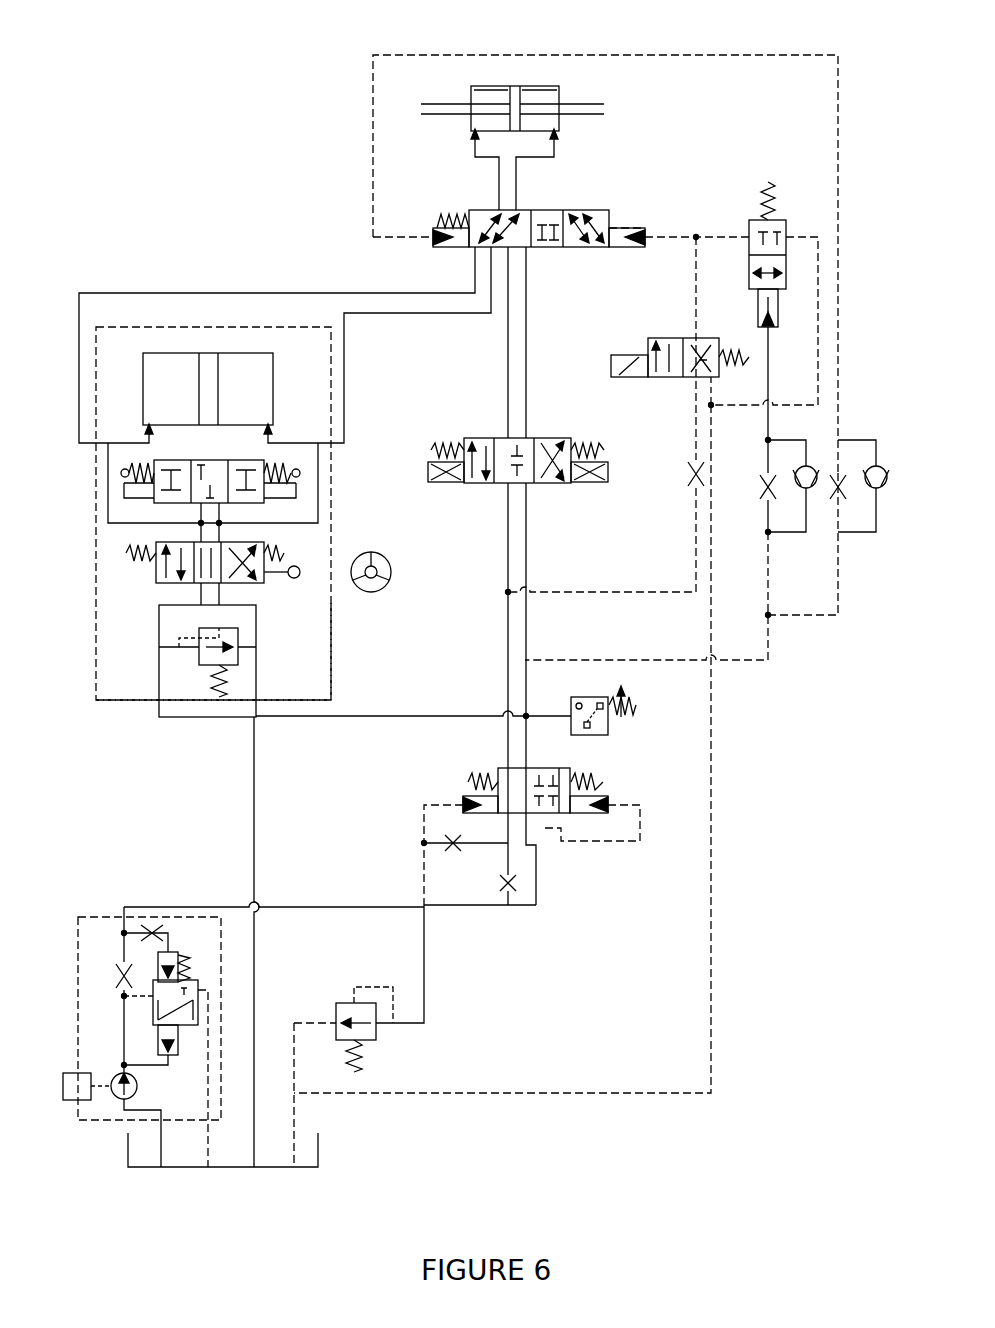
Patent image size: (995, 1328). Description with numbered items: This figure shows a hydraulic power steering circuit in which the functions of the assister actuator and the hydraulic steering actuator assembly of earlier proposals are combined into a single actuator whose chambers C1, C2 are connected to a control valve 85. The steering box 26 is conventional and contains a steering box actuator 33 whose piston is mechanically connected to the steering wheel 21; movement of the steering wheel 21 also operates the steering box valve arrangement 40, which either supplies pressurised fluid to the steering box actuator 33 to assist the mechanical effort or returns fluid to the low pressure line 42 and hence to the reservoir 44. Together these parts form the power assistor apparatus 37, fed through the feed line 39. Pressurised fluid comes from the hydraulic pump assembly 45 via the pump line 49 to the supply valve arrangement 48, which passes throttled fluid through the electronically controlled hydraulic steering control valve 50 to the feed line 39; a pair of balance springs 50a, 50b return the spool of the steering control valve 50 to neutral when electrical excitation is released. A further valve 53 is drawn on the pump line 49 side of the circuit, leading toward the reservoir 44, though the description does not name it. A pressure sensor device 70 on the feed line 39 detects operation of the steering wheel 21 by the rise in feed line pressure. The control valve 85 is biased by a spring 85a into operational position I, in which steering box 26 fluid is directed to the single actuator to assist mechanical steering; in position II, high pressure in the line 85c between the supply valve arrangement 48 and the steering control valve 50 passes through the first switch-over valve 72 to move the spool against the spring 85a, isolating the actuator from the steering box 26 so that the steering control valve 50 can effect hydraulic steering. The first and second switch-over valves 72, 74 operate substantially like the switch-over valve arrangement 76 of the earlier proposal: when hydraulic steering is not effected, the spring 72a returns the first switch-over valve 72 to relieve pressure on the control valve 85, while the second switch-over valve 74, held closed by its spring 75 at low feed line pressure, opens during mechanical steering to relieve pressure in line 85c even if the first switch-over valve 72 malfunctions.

The chamber C1 is at (488, 90).
The chamber C2 is at (530, 90).
The control valve 85 is at (614, 200).
The spring 85a is at (447, 230).
The line 85c is at (510, 560).
The steering box actuator 33 is at (283, 369).
The steering box 26 is at (335, 492).
The power assistor apparatus 37 is at (352, 660).
The steering box valve arrangement 40 is at (130, 584).
The feed line 39 is at (200, 717).
The steering wheel 21 is at (370, 592).
The low pressure line 42 is at (255, 800).
The electronically controlled hydraulic steering control valve 50 is at (465, 415).
The balance spring 50a is at (440, 445).
The balance spring 50b is at (593, 448).
The first switch-over valve 72 is at (648, 334).
The spring 72a is at (710, 355).
The second switch-over valve 74 is at (785, 225).
The spring 75 is at (762, 195).
The switch-over valve arrangement 76 is at (748, 530).
The pressure sensor device 70 is at (590, 697).
The supply valve arrangement 48 is at (555, 845).
The hydraulic pump assembly 45 is at (66, 905).
The reservoir 44 is at (320, 1162).
The pump line 49 is at (355, 907).
The pressure relief valve 53 is at (390, 1052).